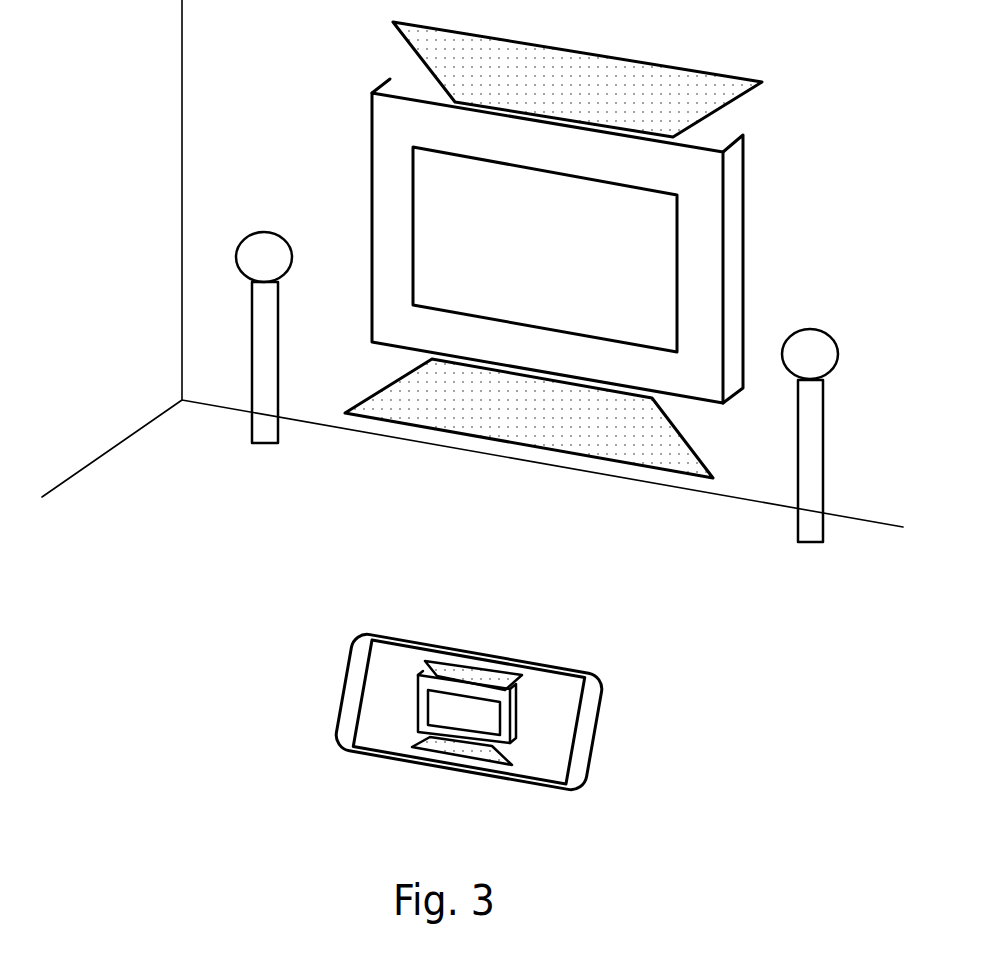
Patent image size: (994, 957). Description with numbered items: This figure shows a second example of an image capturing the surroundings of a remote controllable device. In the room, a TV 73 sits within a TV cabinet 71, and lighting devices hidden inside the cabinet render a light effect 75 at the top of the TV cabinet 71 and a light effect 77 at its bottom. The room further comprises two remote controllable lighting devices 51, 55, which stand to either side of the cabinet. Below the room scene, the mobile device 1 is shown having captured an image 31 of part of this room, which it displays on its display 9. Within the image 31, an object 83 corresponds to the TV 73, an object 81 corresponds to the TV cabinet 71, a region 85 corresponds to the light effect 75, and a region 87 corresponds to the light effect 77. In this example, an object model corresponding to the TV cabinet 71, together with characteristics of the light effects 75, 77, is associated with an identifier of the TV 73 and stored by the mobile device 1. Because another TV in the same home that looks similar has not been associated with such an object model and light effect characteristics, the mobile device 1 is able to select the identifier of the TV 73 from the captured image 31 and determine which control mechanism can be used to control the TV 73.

The mobile device 1 is at (495, 708).
The display 9 is at (577, 742).
The image 31 is at (566, 704).
The remote controllable lighting device 51 is at (288, 238).
The remote controllable lighting device 55 is at (830, 336).
The TV cabinet 71 is at (742, 226).
The TV 73 is at (545, 249).
The light effect 75 is at (577, 79).
The light effect 77 is at (529, 418).
The object 81 is at (415, 730).
The object 83 is at (464, 712).
The region 85 is at (462, 664).
The region 87 is at (463, 764).